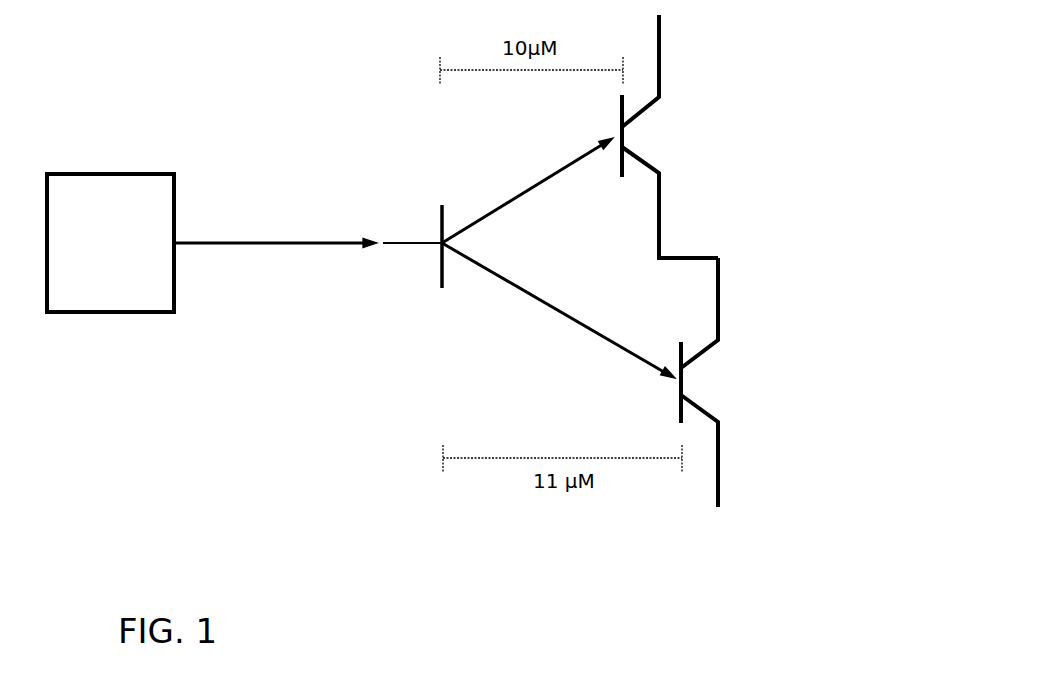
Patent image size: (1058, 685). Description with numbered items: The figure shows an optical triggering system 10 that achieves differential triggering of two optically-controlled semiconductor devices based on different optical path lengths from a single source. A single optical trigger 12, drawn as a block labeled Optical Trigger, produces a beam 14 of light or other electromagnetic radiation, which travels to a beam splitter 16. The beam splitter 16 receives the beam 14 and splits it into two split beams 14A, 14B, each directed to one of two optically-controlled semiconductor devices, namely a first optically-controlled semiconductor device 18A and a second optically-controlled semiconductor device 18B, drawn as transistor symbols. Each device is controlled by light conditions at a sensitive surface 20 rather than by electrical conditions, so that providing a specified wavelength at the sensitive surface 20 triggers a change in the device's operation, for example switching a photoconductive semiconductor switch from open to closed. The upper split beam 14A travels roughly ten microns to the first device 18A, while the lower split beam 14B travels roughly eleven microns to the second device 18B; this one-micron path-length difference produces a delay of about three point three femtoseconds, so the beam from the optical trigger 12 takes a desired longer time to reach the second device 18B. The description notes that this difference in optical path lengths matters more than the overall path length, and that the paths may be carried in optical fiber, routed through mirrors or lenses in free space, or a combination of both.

The optical triggering system 10 is at (252, 138).
The optical trigger 12 is at (140, 174).
The beam 14 is at (250, 243).
The first split beam 14A is at (513, 200).
The second split beam 14B is at (545, 308).
The beam splitter 16 is at (442, 268).
The first optically-controlled semiconductor device 18A is at (666, 62).
The second optically-controlled semiconductor device 18B is at (710, 355).
The sensitive surface 20 is at (617, 114).